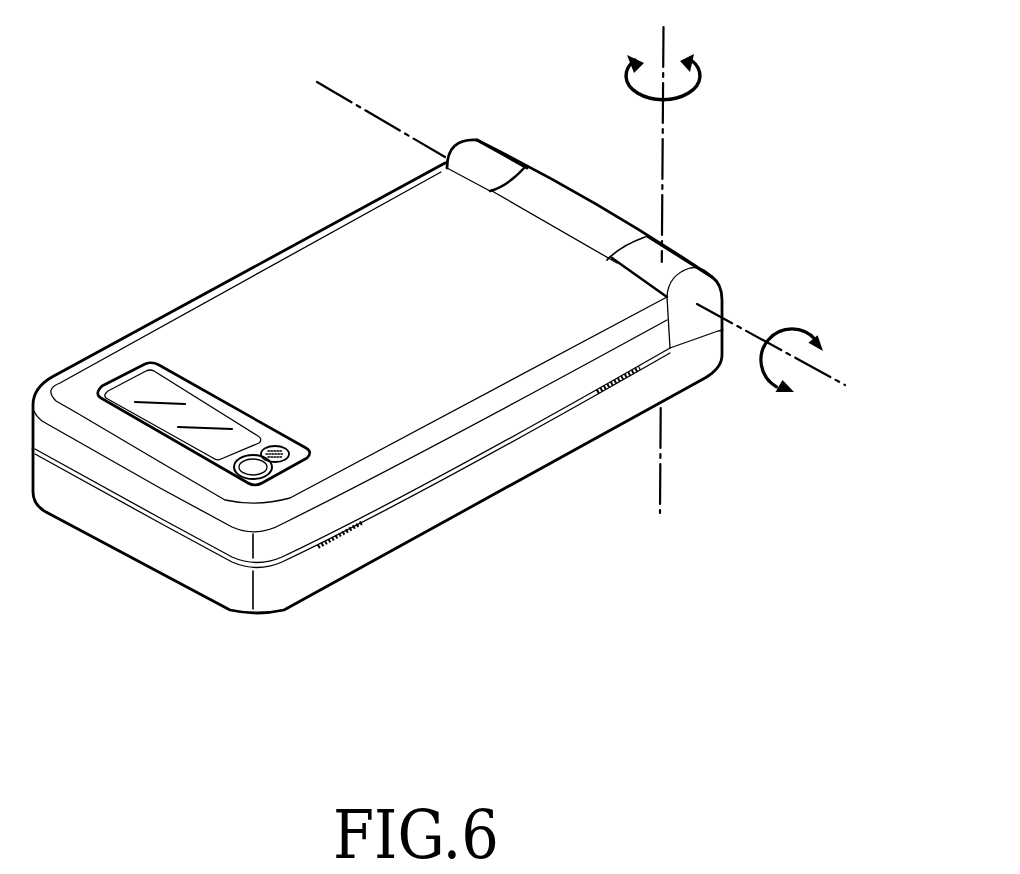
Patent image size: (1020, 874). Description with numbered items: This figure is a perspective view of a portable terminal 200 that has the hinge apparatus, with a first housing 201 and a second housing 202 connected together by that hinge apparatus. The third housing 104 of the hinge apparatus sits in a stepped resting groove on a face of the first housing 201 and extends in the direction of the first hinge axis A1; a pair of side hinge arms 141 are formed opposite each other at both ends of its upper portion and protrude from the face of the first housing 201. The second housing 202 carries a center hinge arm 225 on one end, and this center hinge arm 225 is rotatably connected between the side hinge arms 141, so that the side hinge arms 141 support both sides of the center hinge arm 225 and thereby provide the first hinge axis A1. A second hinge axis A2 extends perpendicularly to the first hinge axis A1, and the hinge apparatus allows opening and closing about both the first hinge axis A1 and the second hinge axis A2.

The portable terminal 200 is at (192, 85).
The second housing 202 is at (229, 290).
The first housing 201 is at (477, 504).
The third housing 104 is at (708, 255).
The side hinge arms 141 is at (487, 158).
The center hinge arm 225 is at (557, 196).
The first hinge axis A1 is at (828, 378).
The second hinge axis A2 is at (665, 40).